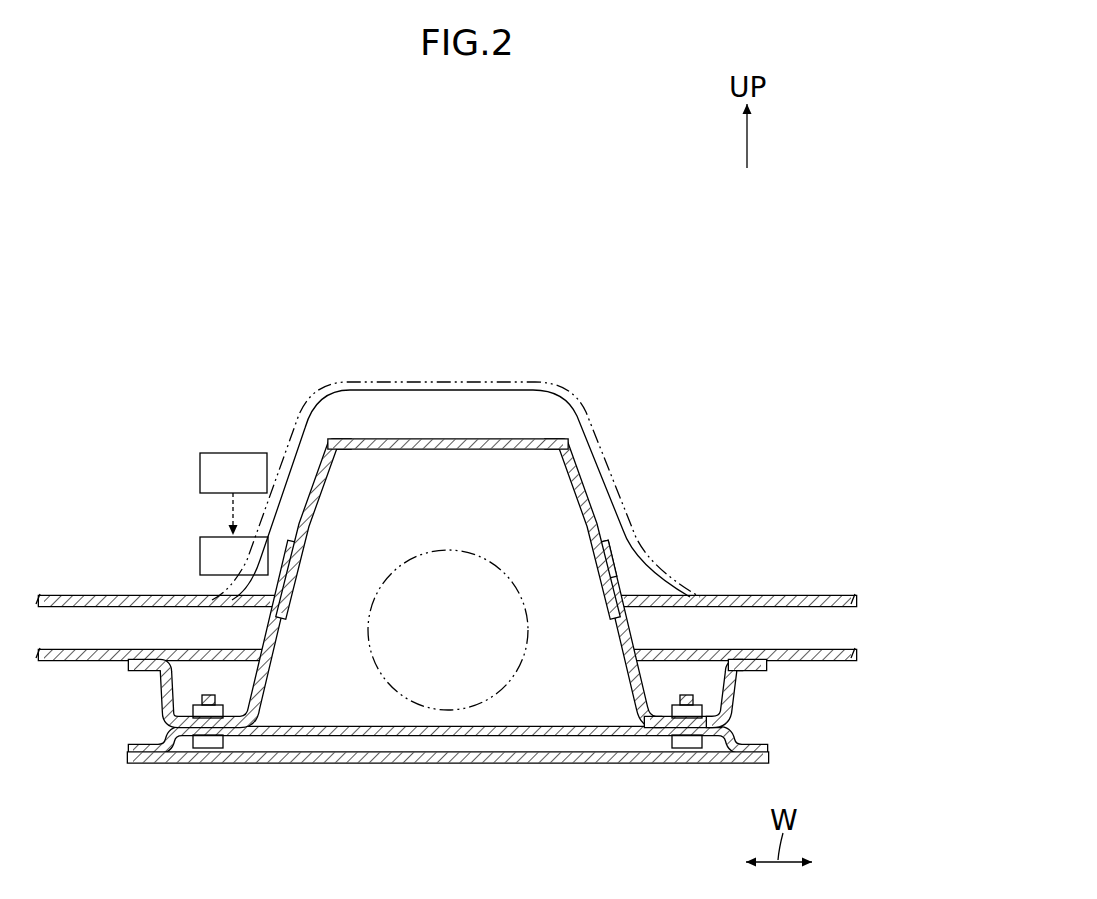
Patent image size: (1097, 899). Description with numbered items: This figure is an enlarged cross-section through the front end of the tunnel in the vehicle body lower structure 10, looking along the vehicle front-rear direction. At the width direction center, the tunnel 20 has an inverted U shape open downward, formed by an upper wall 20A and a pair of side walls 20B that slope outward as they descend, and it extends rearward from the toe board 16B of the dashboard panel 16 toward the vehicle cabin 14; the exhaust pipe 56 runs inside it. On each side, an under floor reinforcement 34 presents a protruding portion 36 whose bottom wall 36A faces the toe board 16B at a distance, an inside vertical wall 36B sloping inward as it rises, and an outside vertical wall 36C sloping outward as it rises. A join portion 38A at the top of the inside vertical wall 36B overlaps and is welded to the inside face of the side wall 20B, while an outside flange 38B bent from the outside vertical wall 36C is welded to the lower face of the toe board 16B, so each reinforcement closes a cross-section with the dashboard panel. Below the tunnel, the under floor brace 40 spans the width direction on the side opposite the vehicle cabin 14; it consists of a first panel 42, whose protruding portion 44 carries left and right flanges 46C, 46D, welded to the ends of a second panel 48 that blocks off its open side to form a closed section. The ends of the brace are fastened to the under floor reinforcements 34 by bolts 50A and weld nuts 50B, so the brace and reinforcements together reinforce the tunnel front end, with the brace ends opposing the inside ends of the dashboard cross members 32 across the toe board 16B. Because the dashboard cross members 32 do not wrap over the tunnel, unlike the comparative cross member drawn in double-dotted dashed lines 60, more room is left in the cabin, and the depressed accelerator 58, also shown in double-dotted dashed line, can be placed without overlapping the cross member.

The vehicle body lower structure 10 is at (644, 799).
The vehicle cabin 14 is at (676, 339).
The dashboard panel 16 is at (459, 635).
The toe board 16B is at (797, 638).
The tunnel 20 is at (448, 482).
The upper wall 20A is at (452, 439).
The side walls 20B is at (312, 520).
The dashboard cross members 32 is at (108, 595).
The under floor reinforcements 34 is at (339, 638).
The protruding portion 36 is at (669, 633).
The bottom wall 36A is at (660, 714).
The inside vertical wall 36B is at (630, 677).
The outside vertical wall 36C is at (735, 700).
The join portion 38A is at (586, 583).
The outside flange 38B is at (748, 670).
The under floor brace 40 is at (450, 747).
The first panel 42 is at (380, 722).
The protruding portion 44 is at (155, 725).
The left flange 46C is at (165, 741).
The right flange 46D is at (752, 737).
The second panel 48 is at (442, 763).
The bolts 50A is at (673, 763).
The weld nuts 50B is at (704, 712).
The exhaust pipe 56 is at (478, 556).
The accelerator 58 is at (200, 555).
The double-dotted dashed lines 60 is at (310, 408).